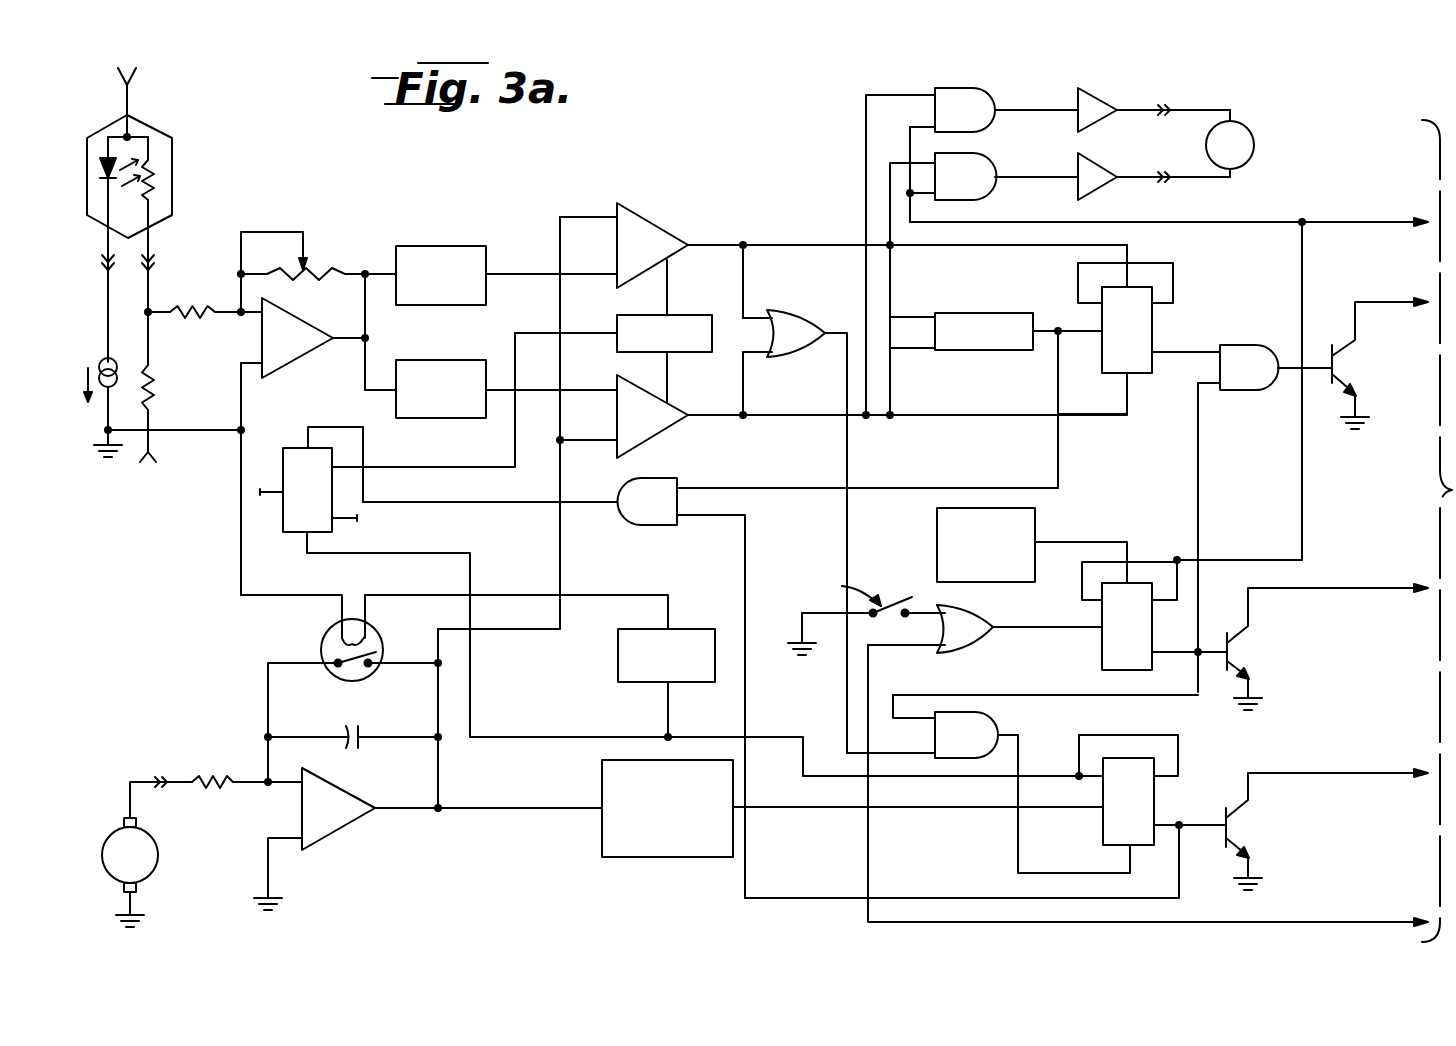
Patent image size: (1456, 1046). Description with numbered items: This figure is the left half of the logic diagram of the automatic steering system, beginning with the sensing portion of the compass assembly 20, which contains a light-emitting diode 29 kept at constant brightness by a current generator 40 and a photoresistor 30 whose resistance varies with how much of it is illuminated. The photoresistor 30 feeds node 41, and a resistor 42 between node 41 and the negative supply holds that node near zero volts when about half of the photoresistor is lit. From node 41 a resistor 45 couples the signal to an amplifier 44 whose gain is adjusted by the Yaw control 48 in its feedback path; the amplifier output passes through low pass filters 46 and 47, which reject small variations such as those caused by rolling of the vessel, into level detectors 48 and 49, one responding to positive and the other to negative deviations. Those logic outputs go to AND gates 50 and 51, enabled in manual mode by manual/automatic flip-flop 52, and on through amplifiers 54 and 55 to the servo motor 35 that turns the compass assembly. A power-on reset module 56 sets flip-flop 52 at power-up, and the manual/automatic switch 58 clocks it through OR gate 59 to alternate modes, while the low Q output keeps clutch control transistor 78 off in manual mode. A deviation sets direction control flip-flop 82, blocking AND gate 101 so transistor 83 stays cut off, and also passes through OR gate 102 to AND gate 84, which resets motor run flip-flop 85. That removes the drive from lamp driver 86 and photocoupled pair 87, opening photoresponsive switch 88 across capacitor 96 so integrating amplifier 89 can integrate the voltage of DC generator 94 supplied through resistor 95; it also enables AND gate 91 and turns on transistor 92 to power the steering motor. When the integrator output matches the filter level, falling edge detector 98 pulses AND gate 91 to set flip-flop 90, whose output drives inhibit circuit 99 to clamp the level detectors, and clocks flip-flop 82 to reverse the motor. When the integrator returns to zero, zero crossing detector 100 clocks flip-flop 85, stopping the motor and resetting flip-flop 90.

The sensing portion of the compass assembly 20 is at (150, 128).
The light-emitting diode 29 is at (104, 142).
The photoresistor 30 is at (162, 188).
The servo motor 35 is at (1248, 128).
The current generator 40 is at (104, 400).
The node 41 is at (156, 300).
The resistor 42 is at (158, 385).
The amplifier 44 is at (300, 368).
The resistor 45 is at (200, 302).
The low pass filter 46 is at (468, 232).
The low pass filter 47 is at (466, 348).
The level detector (and Yaw control) 48 is at (316, 266).
The level detector 49 is at (674, 404).
The AND gate 50 is at (985, 162).
The AND gate 51 is at (985, 90).
The manual/automatic flip-flop 52 is at (1100, 654).
The amplifier 54 is at (1100, 172).
The amplifier 55 is at (1100, 98).
The power-on reset module 56 is at (1040, 512).
The manual/automatic switch 58 is at (912, 574).
The OR gate 59 is at (988, 610).
The clutch control transistor 78 is at (1240, 648).
The direction control flip-flop 82 is at (1155, 342).
The transistor 83 is at (1330, 356).
The AND gate 84 is at (990, 718).
The motor run flip-flop 85 is at (1100, 828).
The lamp driver 86 is at (616, 660).
The photocoupled pair 87 is at (380, 644).
The photoresponsive switch 88 is at (346, 672).
The integrating amplifier 89 is at (376, 772).
The flip-flop 90 is at (284, 514).
The AND gate 91 is at (664, 478).
The transistor 92 is at (1240, 832).
The DC generator 94 is at (152, 840).
The resistor 95 is at (222, 794).
The capacitor 96 is at (364, 732).
The discriminator or falling edge detector 98 is at (990, 296).
The inhibit circuit 99 is at (680, 316).
The zero crossing detector 100 is at (602, 832).
The AND gate 101 is at (1250, 340).
The OR gate 102 is at (815, 300).